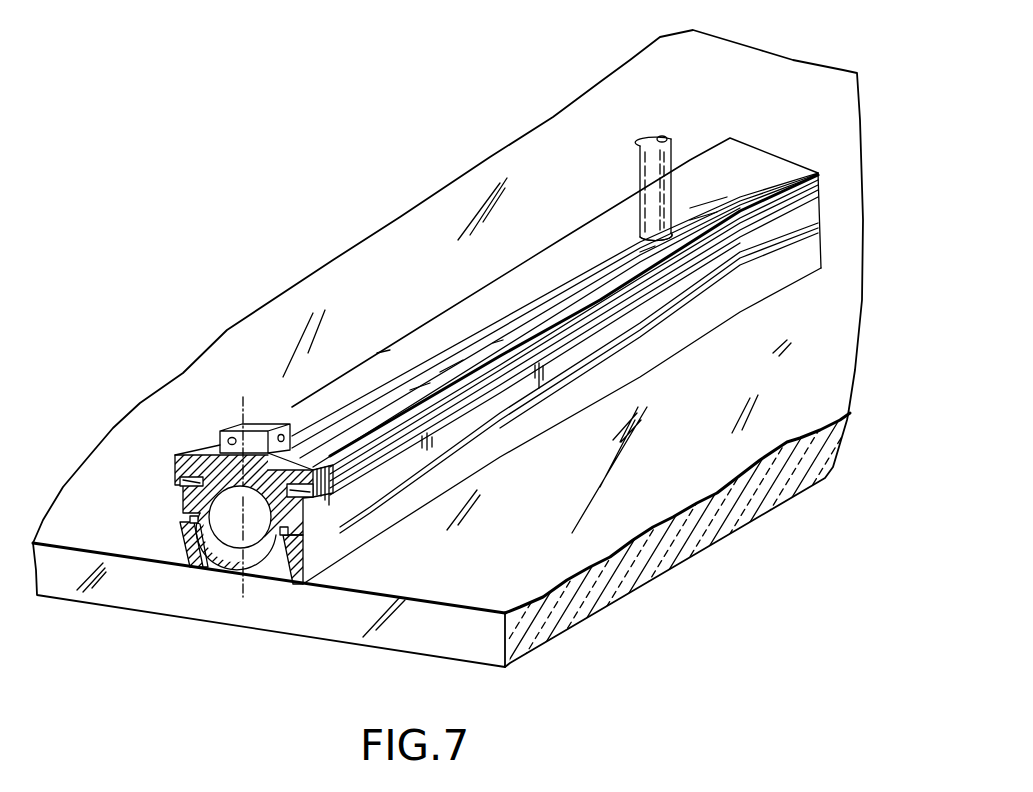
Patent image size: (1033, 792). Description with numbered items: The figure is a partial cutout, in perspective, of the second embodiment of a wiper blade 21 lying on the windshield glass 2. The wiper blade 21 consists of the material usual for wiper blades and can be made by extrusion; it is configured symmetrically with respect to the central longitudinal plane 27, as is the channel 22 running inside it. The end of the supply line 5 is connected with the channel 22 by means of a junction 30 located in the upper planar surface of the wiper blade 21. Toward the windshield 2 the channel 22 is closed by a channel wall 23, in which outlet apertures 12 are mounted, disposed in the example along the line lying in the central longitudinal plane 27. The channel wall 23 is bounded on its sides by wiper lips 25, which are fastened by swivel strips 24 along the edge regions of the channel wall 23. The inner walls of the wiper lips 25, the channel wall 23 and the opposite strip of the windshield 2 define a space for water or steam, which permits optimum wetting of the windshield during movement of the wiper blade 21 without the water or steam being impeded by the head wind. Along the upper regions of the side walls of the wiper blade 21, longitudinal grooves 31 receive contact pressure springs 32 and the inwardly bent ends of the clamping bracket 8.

The windshield glass 2 is at (677, 558).
The supply line 5 is at (640, 163).
The clamping bracket 8 is at (258, 418).
The outlet apertures 12 is at (246, 563).
The wiper blade 21 is at (750, 154).
The channel 22 is at (205, 553).
The channel wall 23 is at (195, 562).
The swivel strips 24 is at (182, 521).
The wiper lips 25 is at (193, 525).
The central longitudinal plane 27 is at (243, 412).
The junction 30 is at (676, 234).
The longitudinal grooves 31 is at (823, 193).
The contact pressure springs 32 is at (305, 497).